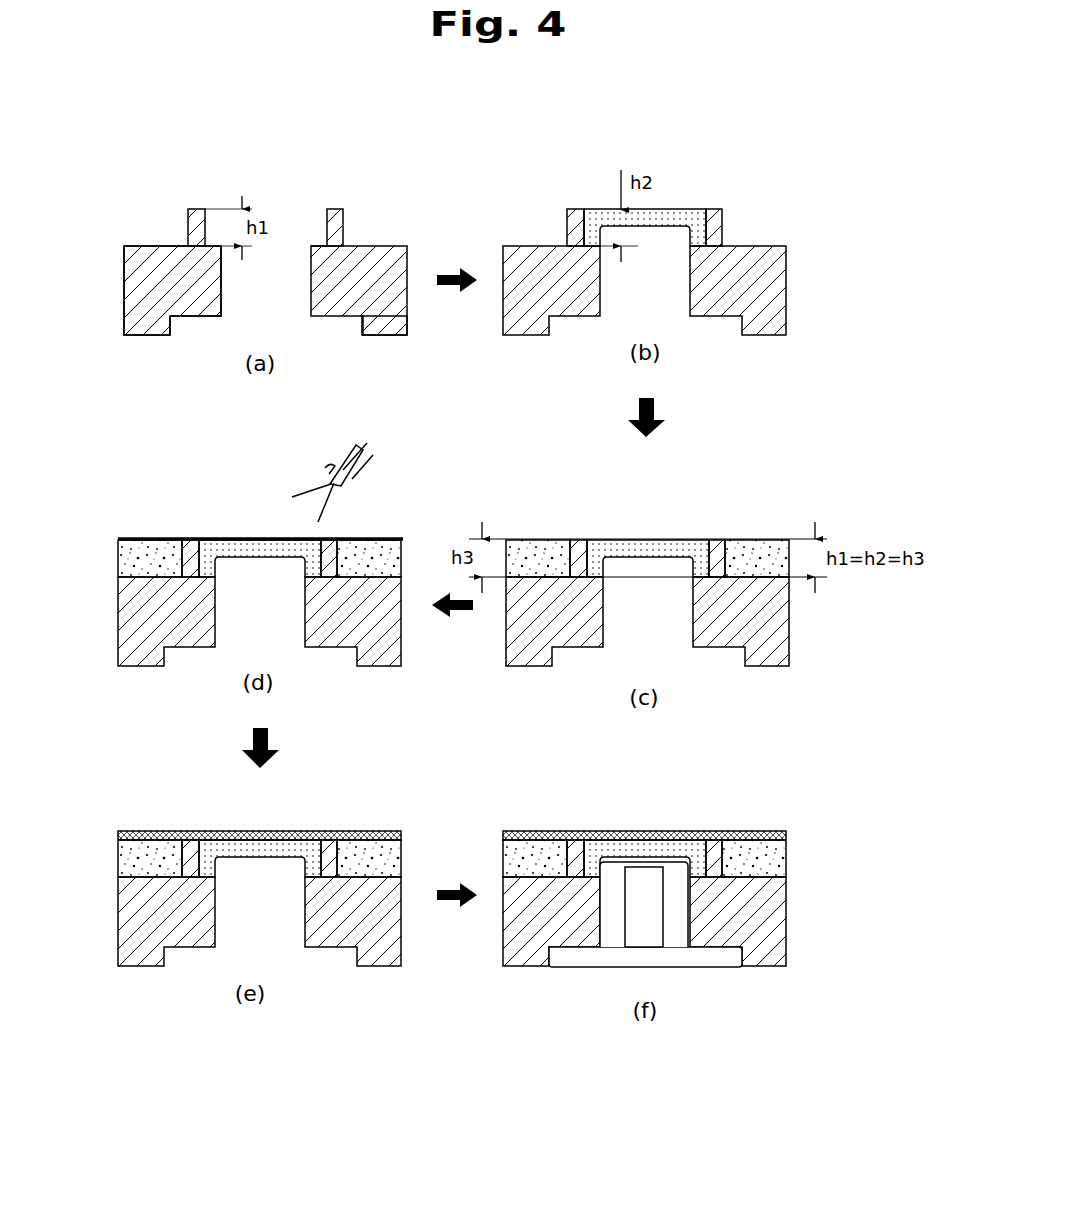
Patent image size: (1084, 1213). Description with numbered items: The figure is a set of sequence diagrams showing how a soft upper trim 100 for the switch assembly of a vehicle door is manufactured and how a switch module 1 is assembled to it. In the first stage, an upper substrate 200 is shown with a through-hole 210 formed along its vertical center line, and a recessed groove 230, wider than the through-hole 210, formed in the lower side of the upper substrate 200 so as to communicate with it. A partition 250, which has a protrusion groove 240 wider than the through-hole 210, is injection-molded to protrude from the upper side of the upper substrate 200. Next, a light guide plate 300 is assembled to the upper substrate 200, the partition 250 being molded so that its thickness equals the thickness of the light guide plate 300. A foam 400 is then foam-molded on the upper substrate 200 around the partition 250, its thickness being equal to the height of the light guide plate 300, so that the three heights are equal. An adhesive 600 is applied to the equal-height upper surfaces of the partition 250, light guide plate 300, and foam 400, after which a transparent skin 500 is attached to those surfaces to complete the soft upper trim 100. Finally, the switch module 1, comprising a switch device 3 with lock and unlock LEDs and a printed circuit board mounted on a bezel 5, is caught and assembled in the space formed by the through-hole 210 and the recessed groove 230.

The soft upper trim 100 is at (203, 810).
The upper substrate 200 is at (160, 161).
The through-hole 210 is at (249, 306).
The recessed groove 230 is at (336, 326).
The protrusion groove 240 is at (320, 228).
The partition 250 is at (340, 225).
The light guide plate 300 is at (684, 215).
The foam 400 is at (537, 552).
The transparent skin 500 is at (347, 838).
The adhesive 600 is at (158, 540).
The switch module 1 is at (635, 972).
The switch device 3 is at (637, 938).
The bezel 5 is at (573, 963).